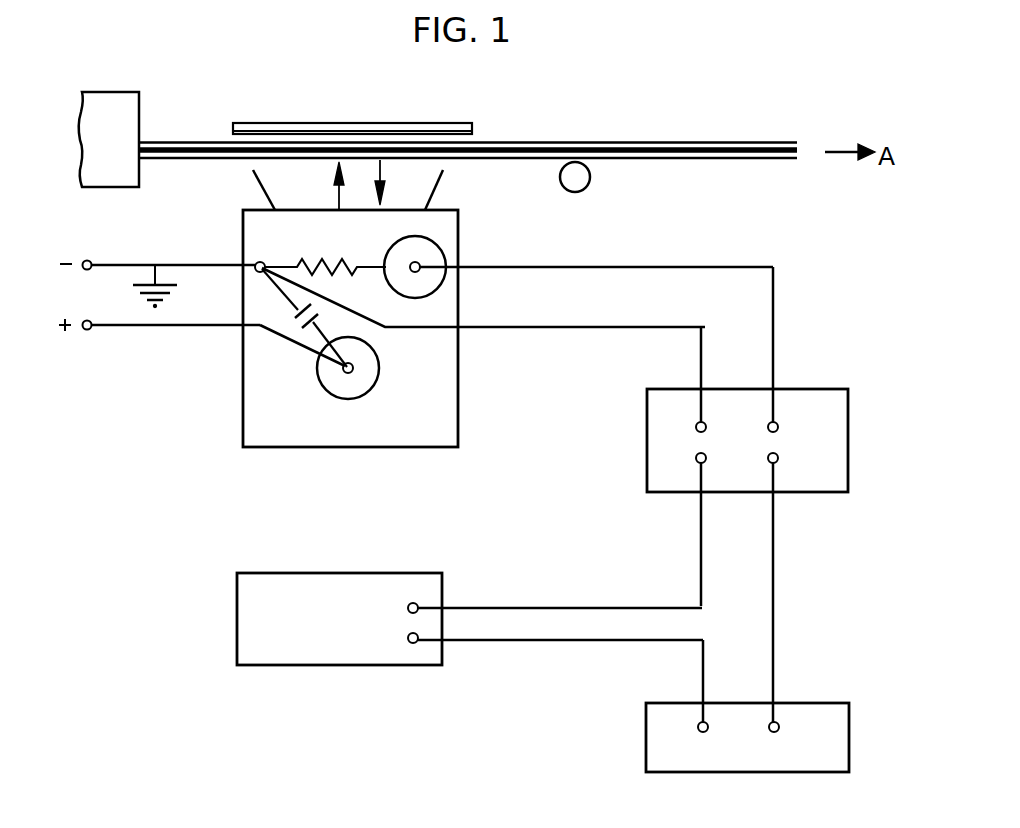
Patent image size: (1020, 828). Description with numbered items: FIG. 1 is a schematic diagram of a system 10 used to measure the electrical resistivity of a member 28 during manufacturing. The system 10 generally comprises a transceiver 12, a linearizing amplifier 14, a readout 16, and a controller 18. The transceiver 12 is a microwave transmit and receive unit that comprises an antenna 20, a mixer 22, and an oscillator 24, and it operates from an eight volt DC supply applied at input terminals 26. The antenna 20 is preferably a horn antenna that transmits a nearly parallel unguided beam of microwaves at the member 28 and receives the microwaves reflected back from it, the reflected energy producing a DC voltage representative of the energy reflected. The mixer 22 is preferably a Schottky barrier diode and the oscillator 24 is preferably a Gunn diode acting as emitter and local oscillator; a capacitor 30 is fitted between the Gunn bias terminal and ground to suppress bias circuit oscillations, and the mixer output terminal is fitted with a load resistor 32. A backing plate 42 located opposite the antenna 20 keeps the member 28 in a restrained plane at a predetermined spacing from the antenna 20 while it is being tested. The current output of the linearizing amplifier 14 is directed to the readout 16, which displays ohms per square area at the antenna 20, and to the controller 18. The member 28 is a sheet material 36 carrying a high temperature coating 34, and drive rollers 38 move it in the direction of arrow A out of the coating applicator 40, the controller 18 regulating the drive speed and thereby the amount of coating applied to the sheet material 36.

The system 10 is at (128, 528).
The transceiver 12 is at (292, 447).
The linearizing amplifier 14 is at (647, 462).
The readout 16 is at (237, 627).
The controller 18 is at (646, 732).
The antenna 20 is at (437, 183).
The mixer 22 is at (440, 250).
The oscillator 24 is at (365, 393).
The input terminals 26 is at (84, 323).
The member 28 is at (630, 163).
The capacitor 30 is at (293, 312).
The load resistor 32 is at (312, 256).
The high temperature coating 34 is at (728, 159).
The sheet material 36 is at (692, 142).
The drive rollers 38 is at (589, 183).
The coating applicator 40 is at (113, 92).
The backing plate 42 is at (305, 122).